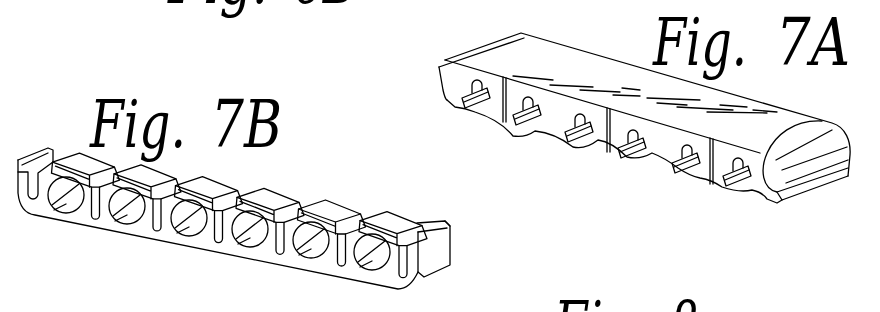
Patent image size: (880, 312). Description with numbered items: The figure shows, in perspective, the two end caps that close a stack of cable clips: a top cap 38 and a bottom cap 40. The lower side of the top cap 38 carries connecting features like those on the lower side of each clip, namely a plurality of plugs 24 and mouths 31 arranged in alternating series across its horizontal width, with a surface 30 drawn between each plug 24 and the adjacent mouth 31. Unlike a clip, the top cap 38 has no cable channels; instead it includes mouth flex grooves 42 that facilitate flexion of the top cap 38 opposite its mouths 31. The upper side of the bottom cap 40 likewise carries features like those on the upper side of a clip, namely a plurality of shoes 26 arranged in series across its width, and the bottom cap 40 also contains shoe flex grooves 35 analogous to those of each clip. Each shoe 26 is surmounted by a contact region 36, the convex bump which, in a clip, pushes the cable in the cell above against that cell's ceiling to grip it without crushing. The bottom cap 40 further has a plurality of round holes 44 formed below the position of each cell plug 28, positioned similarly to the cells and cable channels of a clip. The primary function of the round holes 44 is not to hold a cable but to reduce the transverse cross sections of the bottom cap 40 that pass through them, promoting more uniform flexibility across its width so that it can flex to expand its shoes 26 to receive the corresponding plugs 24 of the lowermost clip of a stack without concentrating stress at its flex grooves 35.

In FIG. 7A, the plug 24 is at (500, 122).
In FIG. 7B, the shoe 26 is at (302, 207).
In FIG. 7B, the cell plug 28 is at (353, 208).
In FIG. 7A, the slot surface 30 is at (500, 131).
In FIG. 7A, the mouth 31 is at (477, 116).
In FIG. 7B, the shoe flex groove 35 is at (340, 264).
In FIG. 7B, the contact region 36 is at (330, 207).
In FIG. 7A, the top cap 38 is at (420, 79).
In FIG. 7B, the bottom cap 40 is at (464, 226).
In FIG. 7A, the mouth flex groove 42 is at (497, 81).
In FIG. 7B, the round hole 44 is at (63, 213).